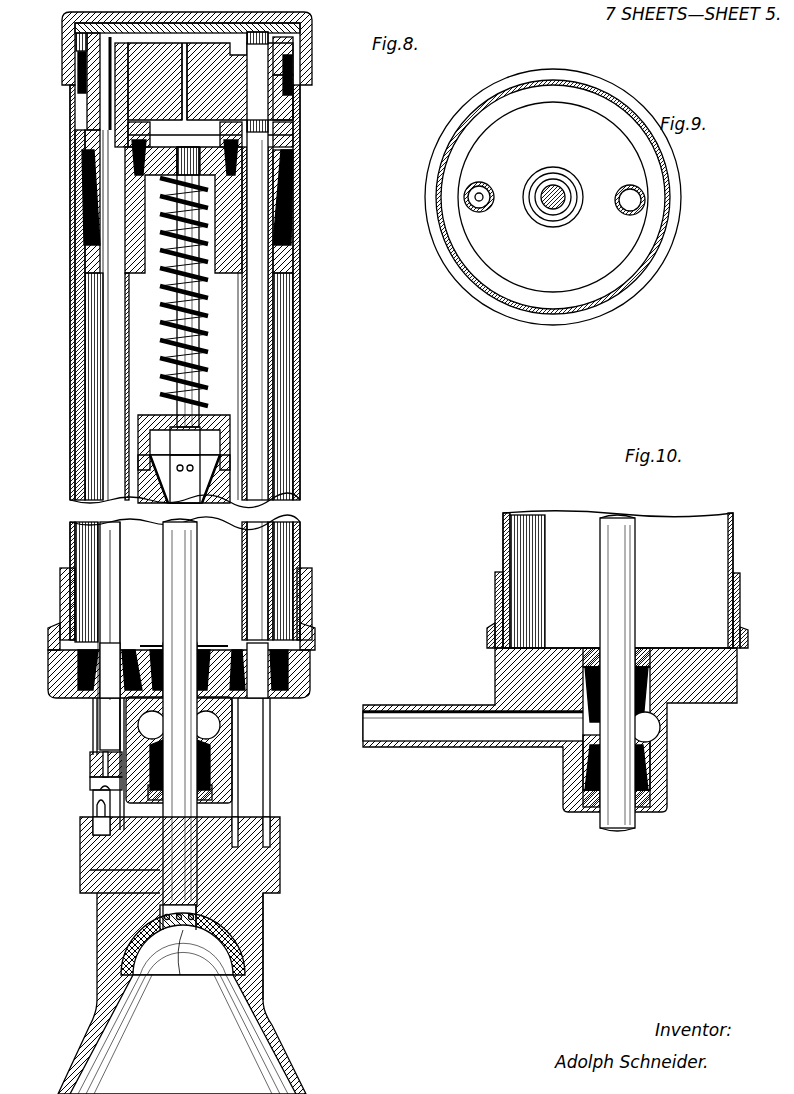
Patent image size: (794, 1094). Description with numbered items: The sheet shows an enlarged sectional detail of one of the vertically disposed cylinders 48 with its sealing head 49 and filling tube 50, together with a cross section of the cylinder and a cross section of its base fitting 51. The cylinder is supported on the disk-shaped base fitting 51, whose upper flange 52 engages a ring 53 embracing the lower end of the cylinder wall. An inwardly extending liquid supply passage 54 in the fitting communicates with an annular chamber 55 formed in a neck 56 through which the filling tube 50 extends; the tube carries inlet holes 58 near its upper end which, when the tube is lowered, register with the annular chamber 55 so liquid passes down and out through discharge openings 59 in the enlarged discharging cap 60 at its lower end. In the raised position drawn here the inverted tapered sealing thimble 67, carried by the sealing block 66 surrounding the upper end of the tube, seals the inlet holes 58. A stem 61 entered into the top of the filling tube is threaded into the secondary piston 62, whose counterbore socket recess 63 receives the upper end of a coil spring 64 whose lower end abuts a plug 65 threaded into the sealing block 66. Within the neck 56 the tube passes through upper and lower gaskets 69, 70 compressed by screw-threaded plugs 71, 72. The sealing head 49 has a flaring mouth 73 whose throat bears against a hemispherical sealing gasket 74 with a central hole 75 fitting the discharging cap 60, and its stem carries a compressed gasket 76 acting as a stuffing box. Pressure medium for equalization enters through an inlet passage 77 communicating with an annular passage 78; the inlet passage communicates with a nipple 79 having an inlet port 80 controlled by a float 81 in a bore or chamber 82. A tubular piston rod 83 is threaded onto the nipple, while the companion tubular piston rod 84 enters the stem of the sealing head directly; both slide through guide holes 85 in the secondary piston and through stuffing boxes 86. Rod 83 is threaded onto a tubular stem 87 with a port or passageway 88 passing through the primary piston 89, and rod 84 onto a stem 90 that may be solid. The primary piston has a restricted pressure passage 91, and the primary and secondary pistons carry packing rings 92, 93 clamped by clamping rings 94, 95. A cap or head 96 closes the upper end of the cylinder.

In FIG. 8, the cylinder 48 is at (55, 362).
In FIG. 9, the cylinder 48 is at (666, 226).
In FIG. 10, the cylinder 48 is at (618, 579).
In FIG. 8, the sealing head 49 is at (280, 881).
In FIG. 8, the filling tube 50 is at (168, 560).
In FIG. 10, the filling tube 50 is at (625, 556).
In FIG. 8, the base fitting 51 is at (300, 669).
In FIG. 10, the base fitting 51 is at (495, 666).
In FIG. 8, the flange 52 is at (312, 636).
In FIG. 10, the flange 52 is at (488, 631).
In FIG. 8, the ring 53 is at (300, 592).
In FIG. 10, the ring 53 is at (495, 586).
In FIG. 10, the liquid supply passage 54 is at (476, 735).
In FIG. 8, the annular chamber 55 is at (215, 723).
In FIG. 10, the annular chamber 55 is at (655, 731).
In FIG. 10, the neck 56 is at (660, 771).
In FIG. 8, the inlet holes 58 is at (190, 461).
In FIG. 8, the discharge openings 59 is at (200, 919).
In FIG. 8, the discharging cap 60 is at (178, 930).
In FIG. 8, the stem 61 is at (205, 350).
In FIG. 9, the stem 61 is at (553, 212).
In FIG. 8, the secondary piston 62 is at (278, 191).
In FIG. 8, the counterbore socket recess 63 is at (250, 261).
In FIG. 9, the counterbore socket recess 63 is at (560, 176).
In FIG. 8, the coil spring 64 is at (205, 325).
In FIG. 9, the coil spring 64 is at (570, 208).
In FIG. 8, the plug 65 is at (228, 416).
In FIG. 8, the sealing block 66 is at (225, 481).
In FIG. 8, the sealing thimble 67 is at (210, 468).
In FIG. 8, the upper gasket 69 is at (207, 694).
In FIG. 10, the upper gasket 69 is at (650, 672).
In FIG. 8, the lower gasket 70 is at (207, 771).
In FIG. 10, the lower gasket 70 is at (655, 779).
In FIG. 8, the screw-threaded plug 71 is at (205, 645).
In FIG. 10, the screw-threaded plug 71 is at (590, 650).
In FIG. 8, the screw-threaded plug 72 is at (207, 796).
In FIG. 10, the screw-threaded plug 72 is at (650, 798).
In FIG. 8, the flaring mouth 73 is at (272, 1036).
In FIG. 8, the hemispherical sealing gasket 74 is at (245, 961).
In FIG. 8, the hole 75 is at (150, 925).
In FIG. 8, the compressed gasket 76 is at (280, 852).
In FIG. 8, the inlet passage 77 is at (100, 866).
In FIG. 8, the annular passage 78 is at (160, 892).
In FIG. 8, the nipple 79 is at (98, 786).
In FIG. 8, the inlet port 80 is at (90, 758).
In FIG. 8, the float 81 is at (80, 840).
In FIG. 8, the bore or chamber 82 is at (92, 807).
In FIG. 8, the tubular piston rod 83 is at (100, 341).
In FIG. 9, the tubular piston rod 83 is at (483, 186).
In FIG. 8, the companion tubular piston rod 84 is at (262, 307).
In FIG. 9, the companion tubular piston rod 84 is at (620, 190).
In FIG. 8, the guide holes 85 is at (80, 227).
In FIG. 8, the stuffing boxes 86 is at (82, 134).
In FIG. 8, the tubular stem 87 is at (75, 76).
In FIG. 8, the port or passageway 88 is at (110, 41).
In FIG. 9, the port or passageway 88 is at (481, 201).
In FIG. 8, the primary piston 89 is at (172, 50).
In FIG. 8, the stem 90 is at (300, 66).
In FIG. 8, the restricted pressure passage 91 is at (212, 44).
In FIG. 8, the packing ring 92 is at (300, 92).
In FIG. 8, the packing ring 93 is at (295, 236).
In FIG. 8, the clamping ring 94 is at (292, 108).
In FIG. 8, the clamping ring 95 is at (298, 266).
In FIG. 9, the clamping ring 95 is at (640, 252).
In FIG. 8, the cap or head 96 is at (310, 33).
In FIG. 9, the cap or head 96 is at (681, 201).